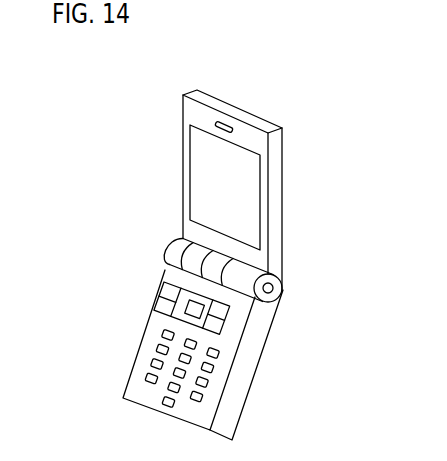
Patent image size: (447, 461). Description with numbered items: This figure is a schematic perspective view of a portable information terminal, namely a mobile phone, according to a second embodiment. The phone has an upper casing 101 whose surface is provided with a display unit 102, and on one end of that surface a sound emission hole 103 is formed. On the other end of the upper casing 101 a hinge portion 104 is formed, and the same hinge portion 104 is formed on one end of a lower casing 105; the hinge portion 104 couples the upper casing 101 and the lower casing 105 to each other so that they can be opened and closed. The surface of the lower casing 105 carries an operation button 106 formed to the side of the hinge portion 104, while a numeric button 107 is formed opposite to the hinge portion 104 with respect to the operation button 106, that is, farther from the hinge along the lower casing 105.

The upper casing 101 is at (266, 121).
The display unit 102 is at (207, 180).
The sound emission hole 103 is at (223, 121).
The hinge portion 104 is at (273, 293).
The lower casing 105 is at (247, 353).
The operation button 106 is at (162, 296).
The numeric button 107 is at (160, 333).